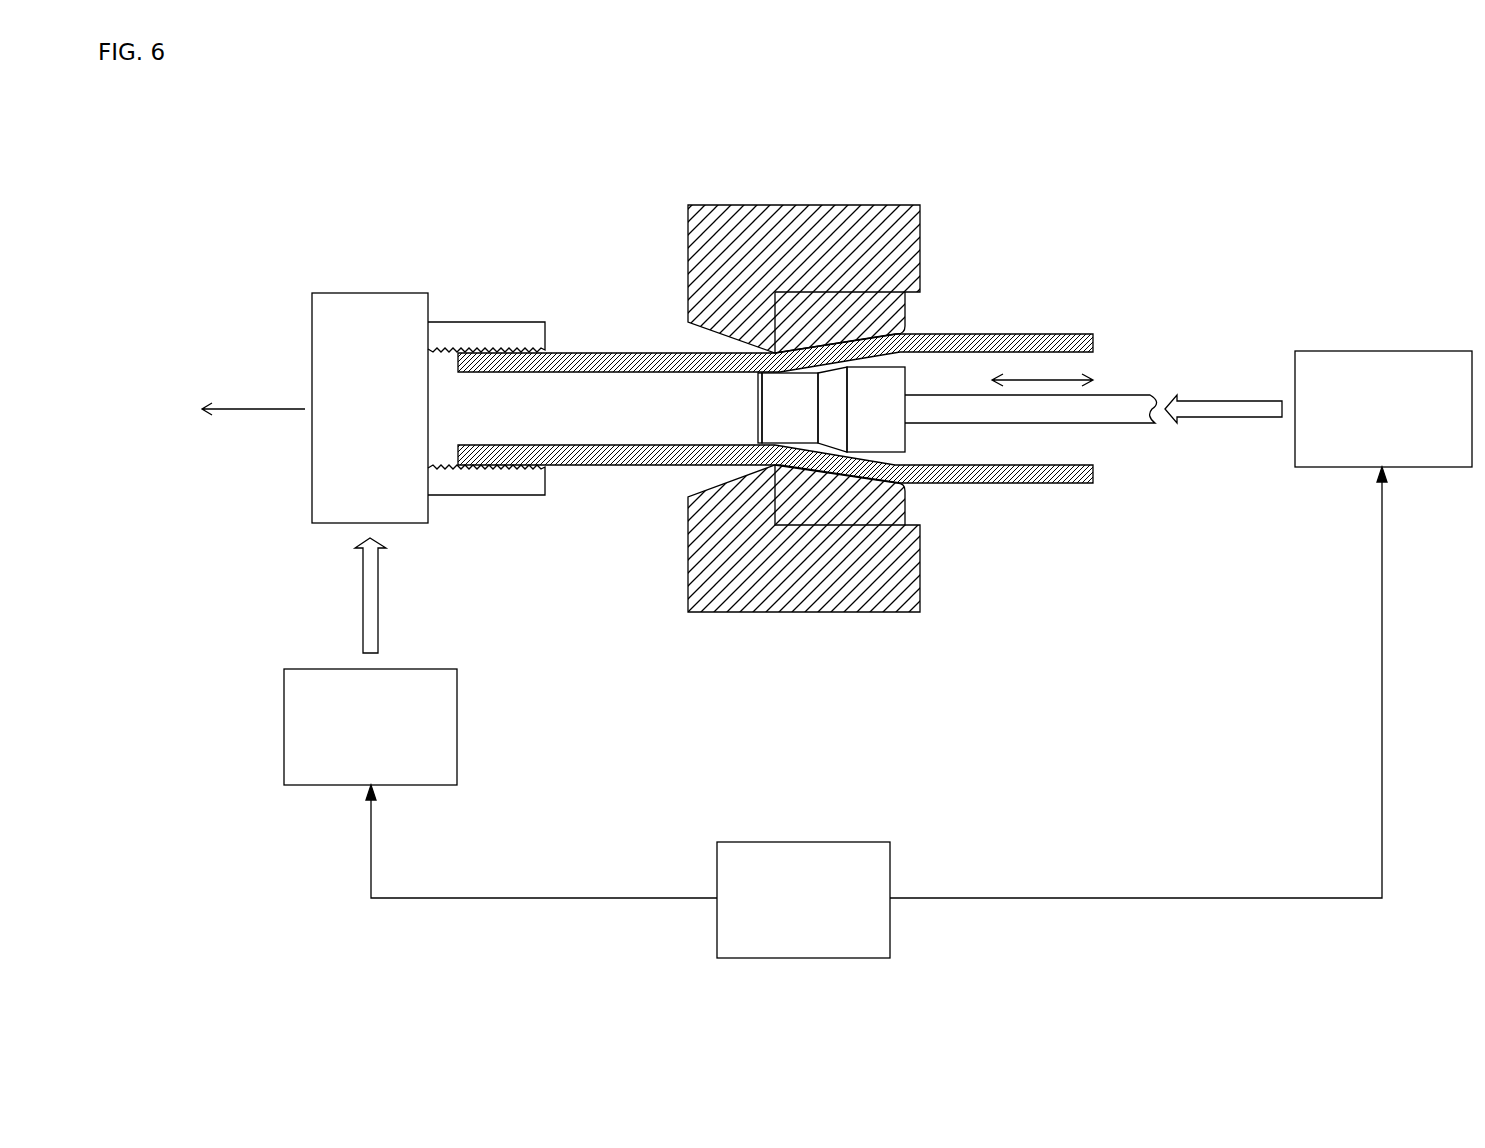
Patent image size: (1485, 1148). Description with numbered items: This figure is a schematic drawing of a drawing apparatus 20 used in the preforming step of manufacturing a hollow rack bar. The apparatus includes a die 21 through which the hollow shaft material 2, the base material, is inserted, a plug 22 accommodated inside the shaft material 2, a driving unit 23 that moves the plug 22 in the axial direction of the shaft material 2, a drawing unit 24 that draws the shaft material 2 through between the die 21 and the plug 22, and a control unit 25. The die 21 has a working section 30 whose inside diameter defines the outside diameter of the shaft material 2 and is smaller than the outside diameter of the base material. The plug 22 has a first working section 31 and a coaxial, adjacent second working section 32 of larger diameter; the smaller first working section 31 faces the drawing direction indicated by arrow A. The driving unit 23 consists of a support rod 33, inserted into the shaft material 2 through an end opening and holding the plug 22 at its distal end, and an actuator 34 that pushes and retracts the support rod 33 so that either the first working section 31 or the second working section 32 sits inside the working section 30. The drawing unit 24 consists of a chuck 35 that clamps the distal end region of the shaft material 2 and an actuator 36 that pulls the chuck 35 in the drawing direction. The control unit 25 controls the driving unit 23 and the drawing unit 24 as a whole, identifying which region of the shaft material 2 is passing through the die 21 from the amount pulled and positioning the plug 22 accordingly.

The drawing apparatus 20 is at (228, 100).
The shaft material 2 is at (1090, 497).
The die 21 is at (903, 620).
The plug 22 is at (740, 384).
The driving unit 23 is at (1188, 322).
The drawing unit 24 is at (335, 539).
The control unit 25 is at (717, 862).
The working section 30 is at (783, 324).
The first working section 31 is at (787, 378).
The second working section 32 is at (873, 378).
The support rod 33 is at (1123, 398).
The actuator 34 is at (1305, 350).
The chuck 35 is at (312, 500).
The actuator 36 is at (215, 525).